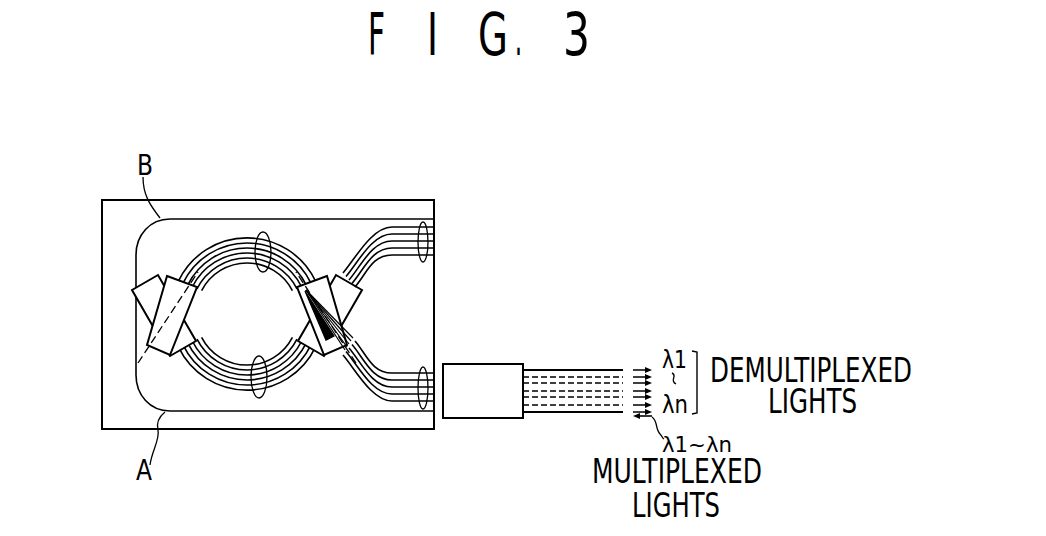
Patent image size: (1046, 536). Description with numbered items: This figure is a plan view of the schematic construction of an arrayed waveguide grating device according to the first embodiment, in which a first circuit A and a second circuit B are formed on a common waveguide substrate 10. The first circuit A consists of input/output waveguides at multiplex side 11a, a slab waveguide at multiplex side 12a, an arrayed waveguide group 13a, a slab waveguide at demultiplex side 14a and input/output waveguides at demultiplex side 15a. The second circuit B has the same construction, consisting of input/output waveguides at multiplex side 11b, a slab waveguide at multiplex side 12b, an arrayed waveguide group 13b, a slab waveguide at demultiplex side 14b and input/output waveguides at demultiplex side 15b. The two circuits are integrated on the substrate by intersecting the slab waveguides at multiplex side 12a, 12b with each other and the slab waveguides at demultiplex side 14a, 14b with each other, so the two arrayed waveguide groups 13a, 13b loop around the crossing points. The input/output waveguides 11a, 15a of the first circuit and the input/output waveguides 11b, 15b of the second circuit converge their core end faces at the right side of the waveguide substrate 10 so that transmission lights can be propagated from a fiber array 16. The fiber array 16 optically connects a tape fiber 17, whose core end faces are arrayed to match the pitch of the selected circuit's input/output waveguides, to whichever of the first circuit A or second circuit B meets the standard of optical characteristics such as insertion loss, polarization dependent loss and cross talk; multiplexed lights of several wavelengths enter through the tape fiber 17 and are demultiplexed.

The waveguide substrate 10 is at (365, 207).
The input/output waveguides at multiplex side 11a is at (427, 415).
The input/output waveguides at multiplex side 11b is at (427, 212).
The slab waveguide at multiplex side 12a is at (137, 338).
The slab waveguide at multiplex side 12b is at (137, 288).
The arrayed waveguide group 13a is at (268, 236).
The arrayed waveguide group 13b is at (267, 397).
The slab waveguide at demultiplex side 14a is at (367, 318).
The slab waveguide at demultiplex side 14b is at (358, 290).
The input/output waveguides at demultiplex side 15a is at (424, 366).
The input/output waveguides at demultiplex side 15b is at (430, 236).
The fiber array 16 is at (498, 418).
The tape fiber 17 is at (590, 367).